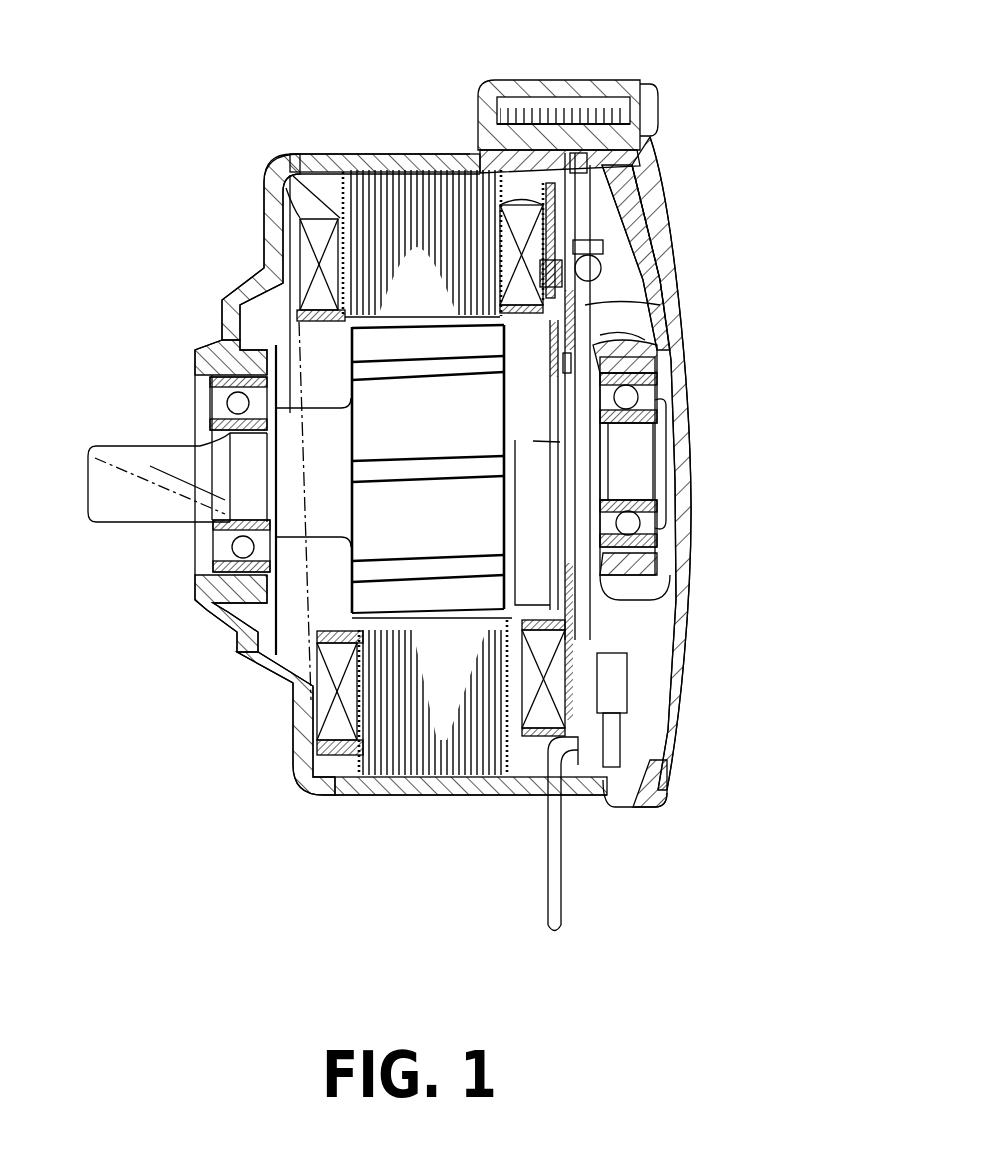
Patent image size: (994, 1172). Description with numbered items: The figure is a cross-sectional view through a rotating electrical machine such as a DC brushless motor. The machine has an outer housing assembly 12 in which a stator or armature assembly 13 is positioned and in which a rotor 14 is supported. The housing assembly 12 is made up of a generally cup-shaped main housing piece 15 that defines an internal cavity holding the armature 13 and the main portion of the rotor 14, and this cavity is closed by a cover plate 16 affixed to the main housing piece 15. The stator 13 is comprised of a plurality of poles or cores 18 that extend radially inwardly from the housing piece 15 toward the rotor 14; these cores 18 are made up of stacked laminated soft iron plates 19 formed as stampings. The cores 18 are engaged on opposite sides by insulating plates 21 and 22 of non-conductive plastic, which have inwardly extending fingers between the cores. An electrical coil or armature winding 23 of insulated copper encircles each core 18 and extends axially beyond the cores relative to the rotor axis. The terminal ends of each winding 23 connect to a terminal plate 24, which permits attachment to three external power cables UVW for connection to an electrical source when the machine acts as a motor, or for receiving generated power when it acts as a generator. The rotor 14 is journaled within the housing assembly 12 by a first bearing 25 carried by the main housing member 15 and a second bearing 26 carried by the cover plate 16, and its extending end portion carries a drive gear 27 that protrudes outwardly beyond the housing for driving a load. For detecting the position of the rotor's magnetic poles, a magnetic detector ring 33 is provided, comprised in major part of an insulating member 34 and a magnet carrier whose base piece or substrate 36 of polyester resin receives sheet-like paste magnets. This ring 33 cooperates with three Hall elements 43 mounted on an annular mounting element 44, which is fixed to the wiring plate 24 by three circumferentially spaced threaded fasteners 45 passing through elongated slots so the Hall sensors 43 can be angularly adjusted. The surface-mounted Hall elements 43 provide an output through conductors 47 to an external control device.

The outer housing assembly 12 is at (277, 130).
The stator or armature assembly 13 is at (288, 642).
The rotor 14 is at (330, 383).
The main housing piece 15 is at (237, 640).
The cover plate 16 is at (670, 663).
The poles or cores 18 is at (433, 640).
The laminated soft iron plates 19 is at (407, 745).
The insulating plate 21 is at (340, 798).
The insulating plate 22 is at (483, 150).
The electrical coil or armature winding 23 is at (263, 173).
The terminal plate 24 is at (640, 162).
The first bearing 25 is at (190, 590).
The second bearing 26 is at (650, 558).
The drive gear 27 is at (143, 447).
The magnetic detector ring 33 is at (590, 481).
The insulating member 34 is at (660, 444).
The base piece or substrate 36 is at (603, 297).
The Hall elements 43 is at (593, 358).
The annular mounting element 44 is at (560, 298).
The threaded fasteners 45 is at (603, 253).
The conductors 47 is at (613, 690).
The external power cables UVW is at (567, 890).